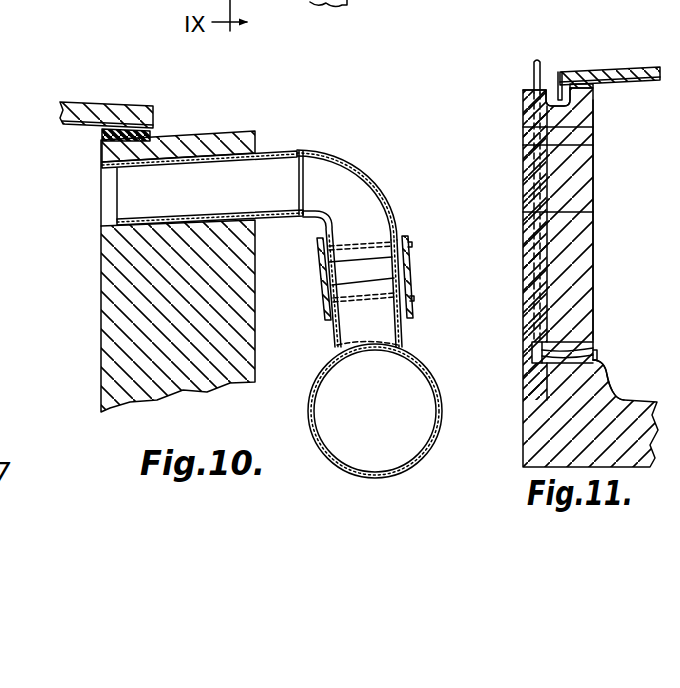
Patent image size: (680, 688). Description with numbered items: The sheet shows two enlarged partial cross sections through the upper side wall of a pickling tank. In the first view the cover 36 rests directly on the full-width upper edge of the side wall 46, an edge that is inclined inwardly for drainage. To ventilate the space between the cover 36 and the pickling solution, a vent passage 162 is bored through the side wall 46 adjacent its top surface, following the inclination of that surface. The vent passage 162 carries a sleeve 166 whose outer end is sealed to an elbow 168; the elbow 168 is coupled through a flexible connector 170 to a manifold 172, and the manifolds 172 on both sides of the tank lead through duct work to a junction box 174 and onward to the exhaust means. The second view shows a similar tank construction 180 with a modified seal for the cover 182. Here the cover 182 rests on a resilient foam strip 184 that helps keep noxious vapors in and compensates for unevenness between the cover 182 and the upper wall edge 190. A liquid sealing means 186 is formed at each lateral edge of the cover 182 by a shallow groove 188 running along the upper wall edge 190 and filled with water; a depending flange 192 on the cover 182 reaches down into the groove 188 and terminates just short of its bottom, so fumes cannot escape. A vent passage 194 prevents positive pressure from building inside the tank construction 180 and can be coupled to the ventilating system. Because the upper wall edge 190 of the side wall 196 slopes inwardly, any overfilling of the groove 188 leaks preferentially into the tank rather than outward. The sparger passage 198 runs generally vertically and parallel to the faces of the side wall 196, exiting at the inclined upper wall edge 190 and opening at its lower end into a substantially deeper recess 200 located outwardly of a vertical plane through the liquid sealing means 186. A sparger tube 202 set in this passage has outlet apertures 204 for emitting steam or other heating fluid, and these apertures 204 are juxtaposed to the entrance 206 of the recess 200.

In FIG. 10, the cover 36 is at (118, 102).
In FIG. 10, the side wall 46 is at (237, 308).
In FIG. 10, the vent passage 162 is at (112, 223).
In FIG. 10, the sleeve 166 is at (213, 160).
In FIG. 10, the elbow 168 is at (367, 172).
In FIG. 10, the flexible connector 170 is at (405, 272).
In FIG. 10, the manifold 172 is at (443, 437).
In FIG. 10, the junction box 174 is at (0, 418).
In FIG. 11, the tank construction 180 is at (655, 257).
In FIG. 11, the cover 182 is at (637, 72).
In FIG. 11, the foam strip 184 is at (593, 92).
In FIG. 11, the liquid sealing means 186 is at (557, 88).
In FIG. 11, the groove 188 is at (570, 102).
In FIG. 11, the upper wall edge 190 is at (528, 90).
In FIG. 11, the depending flange 192 is at (560, 88).
In FIG. 11, the vent passage 194 is at (527, 137).
In FIG. 11, the side wall 196 is at (594, 171).
In FIG. 11, the sparger passage 198 is at (594, 212).
In FIG. 11, the recess 200 is at (607, 382).
In FIG. 11, the sparger tube 202 is at (532, 352).
In FIG. 11, the outlet aperture 204 is at (560, 355).
In FIG. 11, the entrance 206 is at (600, 355).